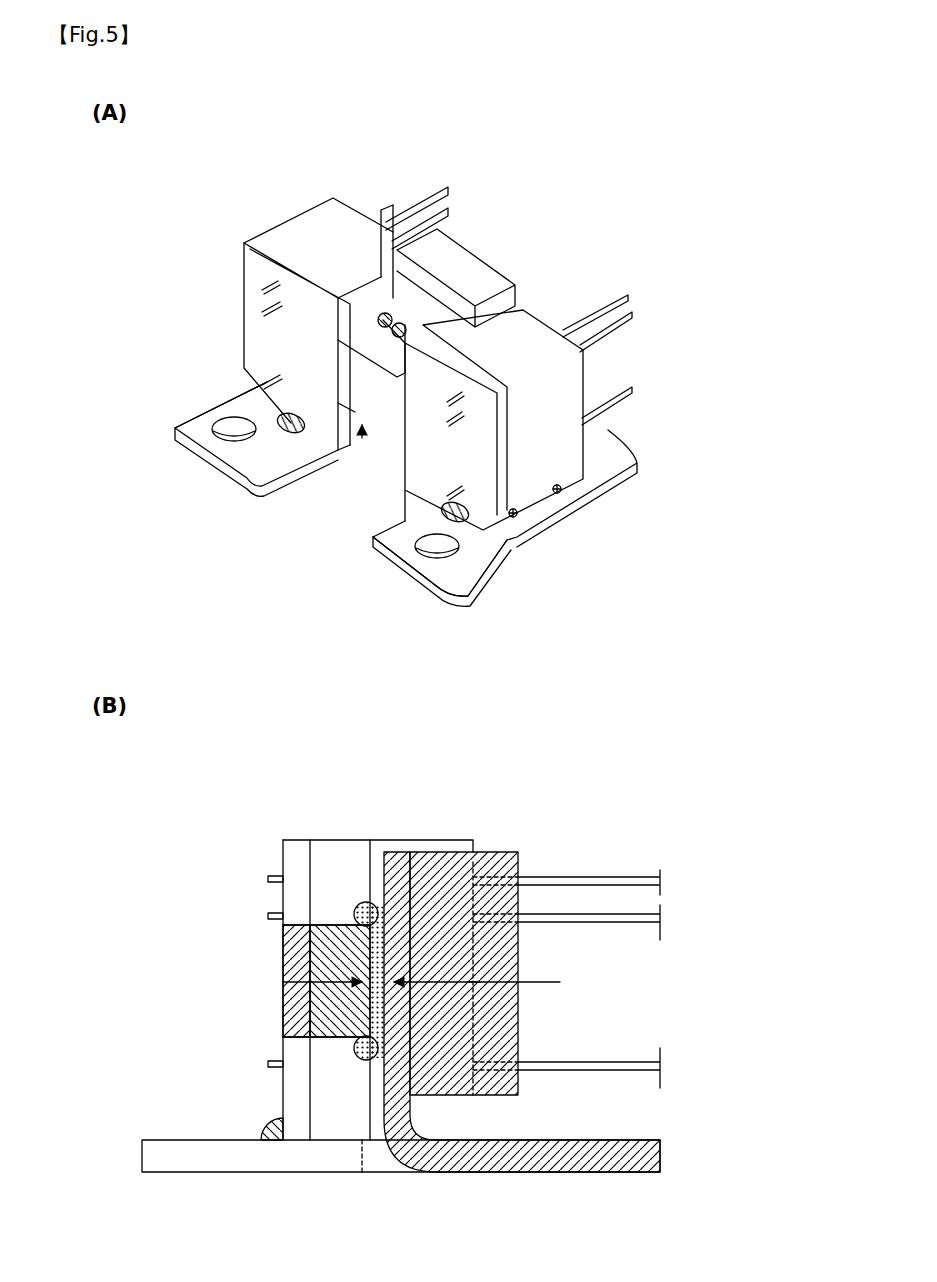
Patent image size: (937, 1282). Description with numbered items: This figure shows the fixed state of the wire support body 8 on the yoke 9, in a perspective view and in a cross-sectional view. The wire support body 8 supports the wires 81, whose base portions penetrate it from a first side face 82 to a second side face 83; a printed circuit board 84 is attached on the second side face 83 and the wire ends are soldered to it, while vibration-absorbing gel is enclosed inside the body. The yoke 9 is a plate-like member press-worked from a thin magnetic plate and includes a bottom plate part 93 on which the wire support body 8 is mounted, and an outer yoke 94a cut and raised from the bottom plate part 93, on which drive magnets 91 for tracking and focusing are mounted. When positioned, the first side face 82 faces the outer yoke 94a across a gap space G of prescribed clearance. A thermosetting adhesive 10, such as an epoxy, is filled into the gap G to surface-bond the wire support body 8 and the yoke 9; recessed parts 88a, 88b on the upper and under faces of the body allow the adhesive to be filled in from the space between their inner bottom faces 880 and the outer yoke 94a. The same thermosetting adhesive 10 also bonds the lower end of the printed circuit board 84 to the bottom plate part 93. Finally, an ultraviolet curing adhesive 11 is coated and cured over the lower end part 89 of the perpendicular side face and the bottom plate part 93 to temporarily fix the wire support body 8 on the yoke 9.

The wire support body 8 is at (318, 232).
The first side face 82 is at (378, 280).
The second side face 83 is at (272, 243).
The printed circuit board 84 is at (260, 267).
The wires 81 is at (436, 216).
The thermosetting adhesive 10 is at (401, 326).
The ultraviolet curing adhesive 11 is at (518, 514).
The drive magnets for tracking and focusing 91 is at (478, 277).
The outer yoke 94a is at (383, 300).
The yoke 9 is at (430, 595).
The bottom plate part 93 is at (210, 1158).
The recessed part 88a is at (175, 428).
The recessed part 88b is at (345, 445).
The inner bottom faces 880 is at (371, 430).
The lower end part 89 is at (500, 522).
The gap space G is at (433, 983).